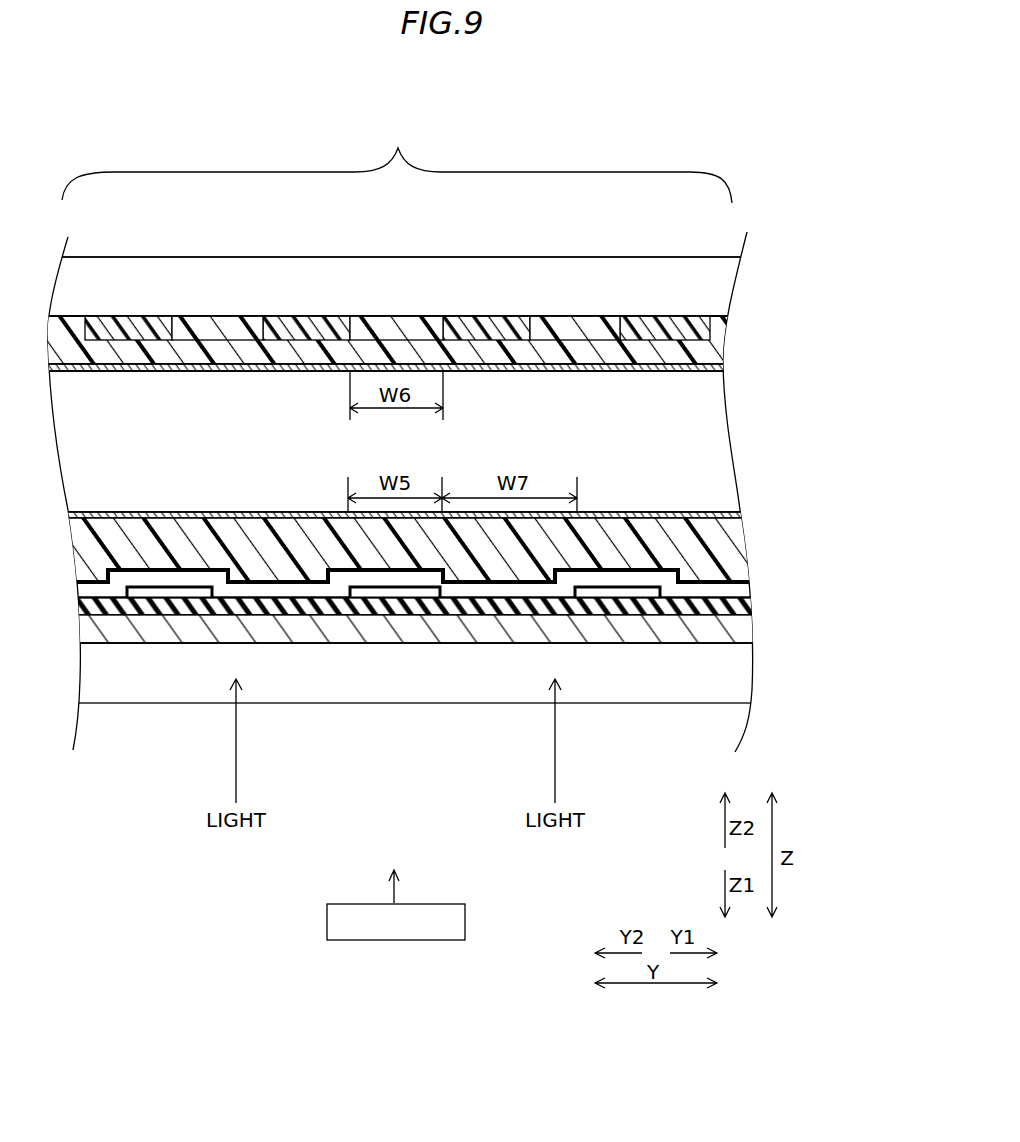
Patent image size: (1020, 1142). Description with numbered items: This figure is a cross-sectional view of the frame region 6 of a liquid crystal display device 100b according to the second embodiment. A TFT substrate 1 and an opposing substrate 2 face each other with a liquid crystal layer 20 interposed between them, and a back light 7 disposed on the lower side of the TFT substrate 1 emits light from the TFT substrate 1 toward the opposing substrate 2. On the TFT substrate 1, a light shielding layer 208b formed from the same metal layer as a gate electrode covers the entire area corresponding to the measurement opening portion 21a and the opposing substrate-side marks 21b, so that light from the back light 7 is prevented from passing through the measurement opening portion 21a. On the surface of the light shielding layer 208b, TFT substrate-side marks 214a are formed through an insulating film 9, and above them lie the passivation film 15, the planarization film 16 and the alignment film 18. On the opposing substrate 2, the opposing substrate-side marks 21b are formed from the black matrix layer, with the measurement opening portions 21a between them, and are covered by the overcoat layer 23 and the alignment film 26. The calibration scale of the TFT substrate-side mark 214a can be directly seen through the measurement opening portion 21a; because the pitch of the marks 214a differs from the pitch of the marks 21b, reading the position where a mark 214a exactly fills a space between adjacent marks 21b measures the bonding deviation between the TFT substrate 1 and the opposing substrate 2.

The frame region 6 is at (397, 160).
The liquid crystal display device 100b is at (758, 189).
The opposing substrate 2 is at (705, 291).
The measurement opening portion 21a is at (195, 324).
The opposing substrate-side mark 21b is at (127, 327).
The overcoat layer 23 is at (715, 346).
The alignment film 26 is at (720, 369).
The liquid crystal layer 20 is at (712, 446).
The alignment film 18 is at (743, 520).
The planarization film 16 is at (745, 548).
The passivation film 15 is at (752, 590).
The TFT substrate-side mark 214a is at (163, 597).
The insulating film 9 is at (740, 612).
The light shielding layer 208b is at (750, 637).
The TFT substrate 1 is at (740, 678).
The back light 7 is at (465, 917).